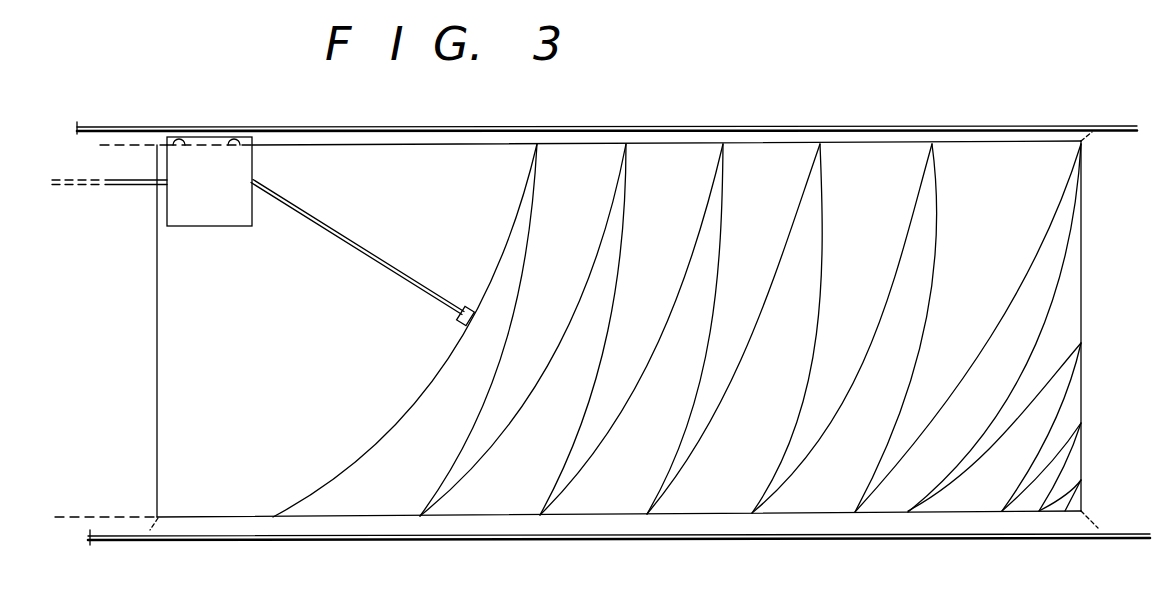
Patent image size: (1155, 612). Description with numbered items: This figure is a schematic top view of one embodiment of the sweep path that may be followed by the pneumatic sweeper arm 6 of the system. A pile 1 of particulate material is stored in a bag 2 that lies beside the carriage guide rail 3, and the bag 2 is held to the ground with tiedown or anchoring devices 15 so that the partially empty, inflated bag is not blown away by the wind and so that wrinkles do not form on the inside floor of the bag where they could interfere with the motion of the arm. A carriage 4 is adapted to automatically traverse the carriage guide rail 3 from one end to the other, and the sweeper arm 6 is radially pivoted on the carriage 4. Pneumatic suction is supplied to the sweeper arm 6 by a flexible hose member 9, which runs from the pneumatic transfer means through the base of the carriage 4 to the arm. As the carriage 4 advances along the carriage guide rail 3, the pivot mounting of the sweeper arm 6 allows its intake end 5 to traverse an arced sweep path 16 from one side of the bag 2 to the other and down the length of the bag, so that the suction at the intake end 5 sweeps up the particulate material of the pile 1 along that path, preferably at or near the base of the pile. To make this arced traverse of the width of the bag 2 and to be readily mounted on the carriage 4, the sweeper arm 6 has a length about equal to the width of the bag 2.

The pile 1 is at (838, 123).
The bag 2 is at (300, 328).
The carriage guide rail 3 is at (1098, 124).
The carriage 4 is at (205, 156).
The intake end 5 is at (462, 305).
The sweeper arm 6 is at (372, 250).
The flexible hose member 9 is at (130, 188).
The anchoring devices 15 is at (148, 536).
The arced sweep path 16 is at (477, 418).